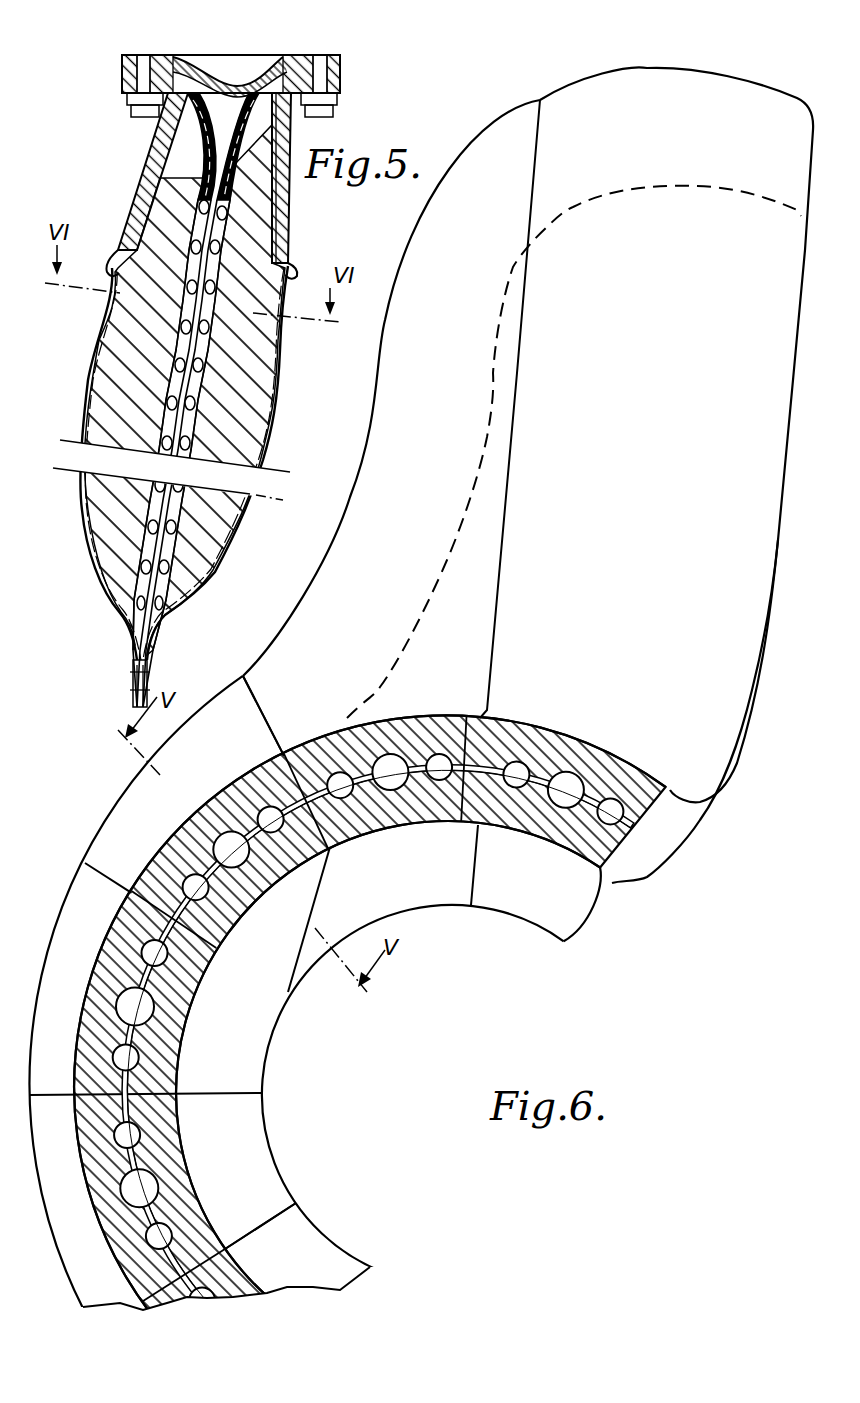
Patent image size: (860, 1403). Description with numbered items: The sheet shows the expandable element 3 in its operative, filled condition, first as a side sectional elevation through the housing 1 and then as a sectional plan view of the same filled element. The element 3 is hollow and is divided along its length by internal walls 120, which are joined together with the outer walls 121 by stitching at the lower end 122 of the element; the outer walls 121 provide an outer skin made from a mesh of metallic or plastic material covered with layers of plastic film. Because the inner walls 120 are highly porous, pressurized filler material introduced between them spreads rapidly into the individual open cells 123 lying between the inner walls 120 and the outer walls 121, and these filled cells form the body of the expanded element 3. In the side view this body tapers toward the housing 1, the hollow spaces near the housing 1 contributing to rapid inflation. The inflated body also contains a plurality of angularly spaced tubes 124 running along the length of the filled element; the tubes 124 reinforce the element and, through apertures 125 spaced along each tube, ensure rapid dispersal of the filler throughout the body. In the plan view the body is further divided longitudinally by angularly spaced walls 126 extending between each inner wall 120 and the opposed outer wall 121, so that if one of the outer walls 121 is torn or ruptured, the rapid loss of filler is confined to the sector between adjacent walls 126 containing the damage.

In FIG. 5, the housing 1 is at (160, 137).
In FIG. 5, the expandable element 3 is at (180, 230).
In FIG. 5, the internal walls 120 is at (190, 125).
In FIG. 6, the internal walls 120 is at (267, 815).
In FIG. 5, the outer walls 121 is at (84, 528).
In FIG. 6, the outer walls 121 is at (108, 837).
In FIG. 5, the lower end 122 is at (138, 672).
In FIG. 5, the open cells 123 is at (122, 350).
In FIG. 6, the open cells 123 is at (173, 1010).
In FIG. 5, the tubes 124 is at (227, 174).
In FIG. 6, the tubes 124 is at (130, 953).
In FIG. 5, the apertures 125 is at (215, 250).
In FIG. 6, the walls 126 is at (267, 712).